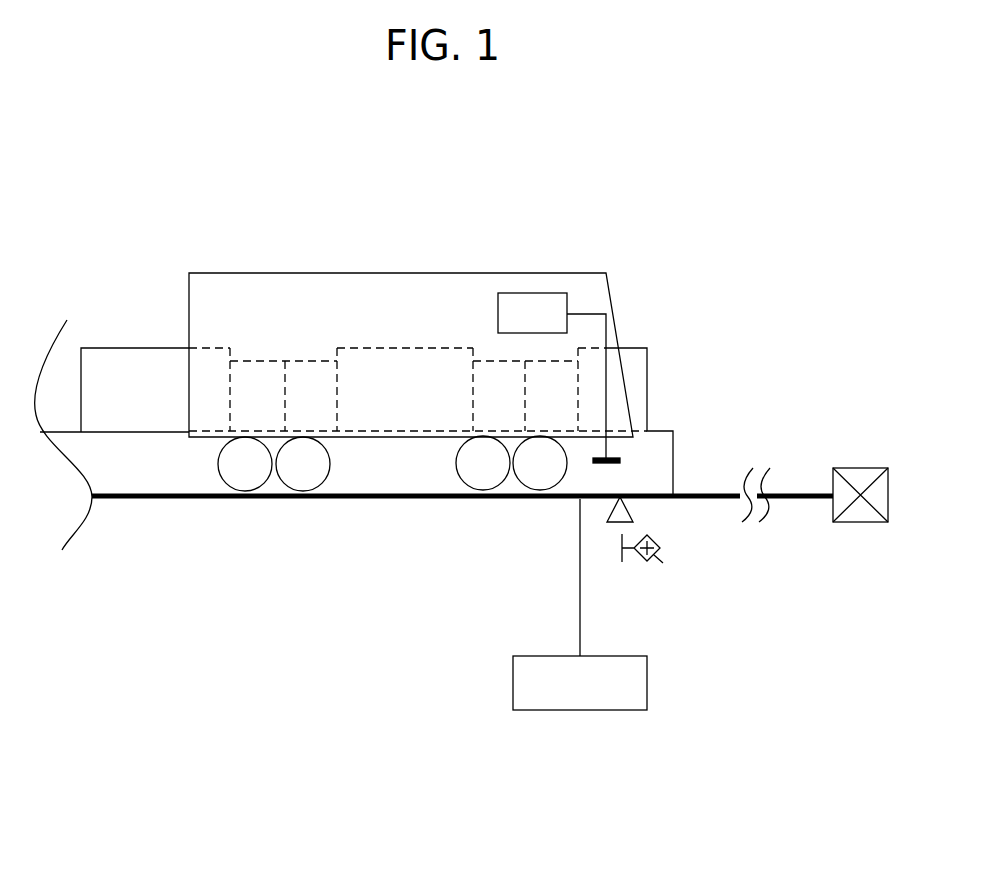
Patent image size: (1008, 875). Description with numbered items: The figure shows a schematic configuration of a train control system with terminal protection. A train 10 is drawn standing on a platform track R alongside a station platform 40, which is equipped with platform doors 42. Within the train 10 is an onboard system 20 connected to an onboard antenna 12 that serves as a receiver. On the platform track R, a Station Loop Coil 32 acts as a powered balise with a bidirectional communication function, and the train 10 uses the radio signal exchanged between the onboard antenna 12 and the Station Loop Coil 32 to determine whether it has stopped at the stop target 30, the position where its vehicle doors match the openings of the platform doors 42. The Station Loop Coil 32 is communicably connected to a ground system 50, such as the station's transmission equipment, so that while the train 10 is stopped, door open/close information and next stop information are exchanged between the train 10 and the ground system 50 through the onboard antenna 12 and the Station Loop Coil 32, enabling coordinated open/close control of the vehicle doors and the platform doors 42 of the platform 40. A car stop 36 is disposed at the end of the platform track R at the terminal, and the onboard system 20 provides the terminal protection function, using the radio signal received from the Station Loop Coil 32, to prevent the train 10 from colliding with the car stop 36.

The train 10 is at (297, 273).
The onboard antenna 12 is at (620, 460).
The onboard system 20 is at (498, 313).
The stop target 30 is at (657, 563).
The Station Loop Coil (SLC) 32 is at (633, 512).
The car stop 36 is at (850, 468).
The platform 40 is at (668, 428).
The platform doors 42 is at (132, 347).
The ground system 50 is at (565, 710).
The platform track R is at (162, 500).